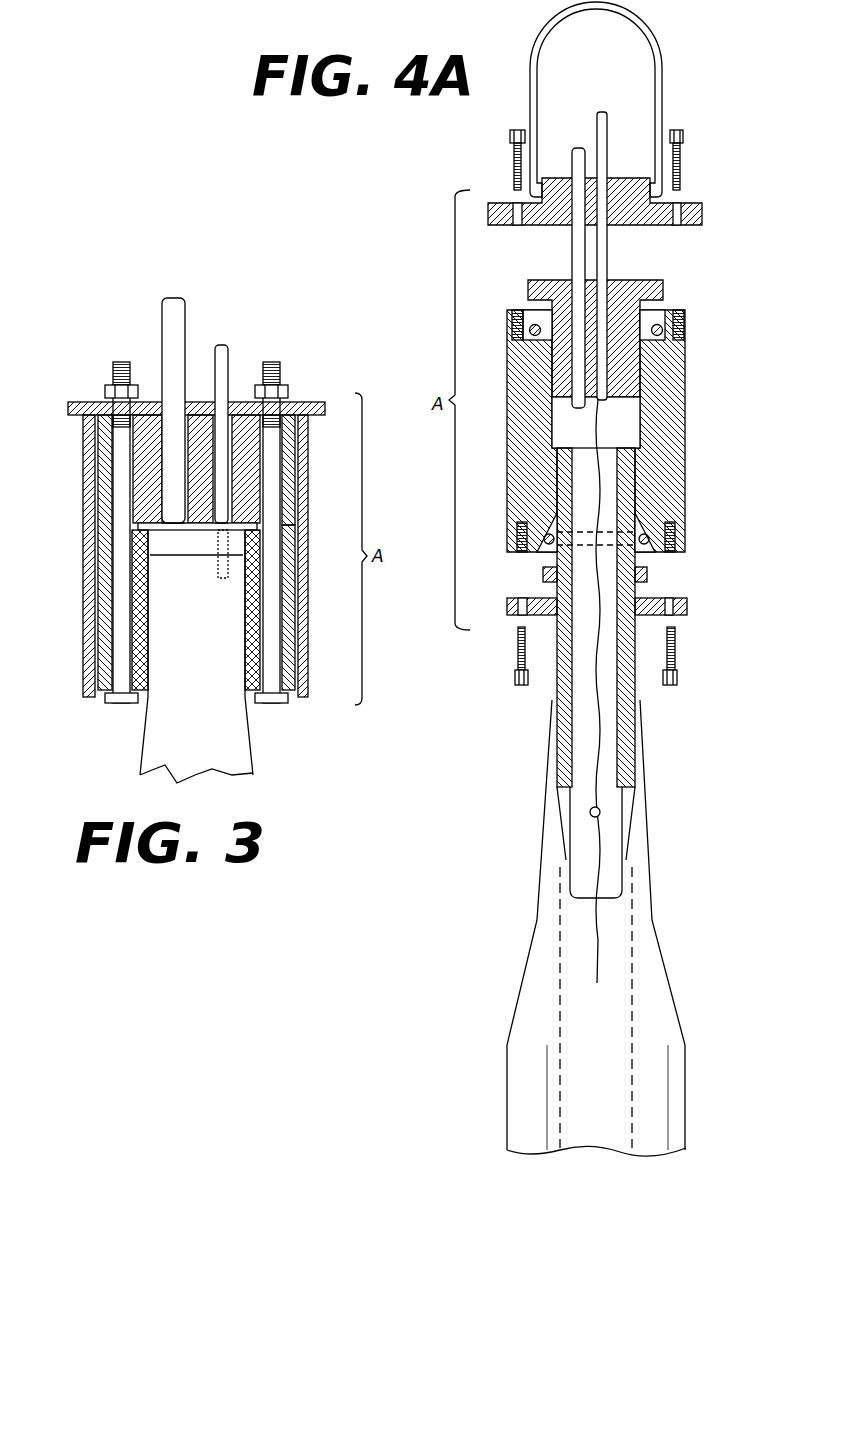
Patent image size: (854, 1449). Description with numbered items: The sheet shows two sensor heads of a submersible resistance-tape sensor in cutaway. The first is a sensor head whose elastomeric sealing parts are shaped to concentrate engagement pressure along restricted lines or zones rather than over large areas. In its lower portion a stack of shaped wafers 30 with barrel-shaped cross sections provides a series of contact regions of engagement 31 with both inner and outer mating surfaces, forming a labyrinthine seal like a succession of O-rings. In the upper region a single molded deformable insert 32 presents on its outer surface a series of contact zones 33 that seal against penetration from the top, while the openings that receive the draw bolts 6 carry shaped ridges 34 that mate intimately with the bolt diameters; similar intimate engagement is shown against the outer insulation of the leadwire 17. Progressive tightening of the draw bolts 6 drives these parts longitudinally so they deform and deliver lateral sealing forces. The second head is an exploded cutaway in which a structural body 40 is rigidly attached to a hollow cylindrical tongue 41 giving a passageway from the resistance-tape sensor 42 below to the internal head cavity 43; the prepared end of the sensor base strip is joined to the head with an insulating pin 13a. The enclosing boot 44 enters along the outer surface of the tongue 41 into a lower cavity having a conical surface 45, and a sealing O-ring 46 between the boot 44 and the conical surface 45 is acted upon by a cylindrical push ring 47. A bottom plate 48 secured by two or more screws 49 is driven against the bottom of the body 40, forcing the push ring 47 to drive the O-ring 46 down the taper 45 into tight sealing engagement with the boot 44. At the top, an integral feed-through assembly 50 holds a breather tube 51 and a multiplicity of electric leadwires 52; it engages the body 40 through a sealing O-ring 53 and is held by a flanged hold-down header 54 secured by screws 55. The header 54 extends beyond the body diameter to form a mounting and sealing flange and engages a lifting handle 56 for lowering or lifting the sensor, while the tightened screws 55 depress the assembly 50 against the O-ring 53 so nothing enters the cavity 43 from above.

In FIG. 3, the draw bolt 6 is at (281, 369).
In FIG. 3, the leadwire 17 is at (228, 362).
In FIG. 3, the shaped wafer 30 is at (310, 635).
In FIG. 3, the contact region of engagement 31 is at (245, 597).
In FIG. 3, the deformable insert 32 is at (303, 470).
In FIG. 3, the contact zone 33 is at (310, 487).
In FIG. 3, the shaped ridge 34 is at (98, 482).
In FIG. 4A, the structural body 40 is at (670, 412).
In FIG. 4A, the cylindrical tongue 41 is at (633, 740).
In FIG. 4A, the resistance-tape sensor 42 is at (605, 1030).
In FIG. 4A, the internal head cavity 43 is at (633, 429).
In FIG. 4A, the enclosing boot 44 is at (645, 940).
In FIG. 4A, the conical surface 45 is at (641, 530).
In FIG. 4A, the sealing O-ring 46 is at (545, 553).
In FIG. 4A, the cylindrical push ring 47 is at (652, 578).
In FIG. 4A, the bottom plate 48 is at (690, 610).
In FIG. 4A, the screw 49 is at (515, 680).
In FIG. 4A, the feed-through assembly 50 is at (663, 296).
In FIG. 4A, the breather tube 51 is at (572, 162).
In FIG. 4A, the electric leadwire 52 is at (607, 142).
In FIG. 4A, the sealing O-ring 53 is at (650, 328).
In FIG. 4A, the flanged hold-down header 54 is at (610, 201).
In FIG. 4A, the screw 55 is at (508, 137).
In FIG. 4A, the lifting handle 56 is at (553, 26).
In FIG. 4A, the insulating pin 13a is at (601, 812).